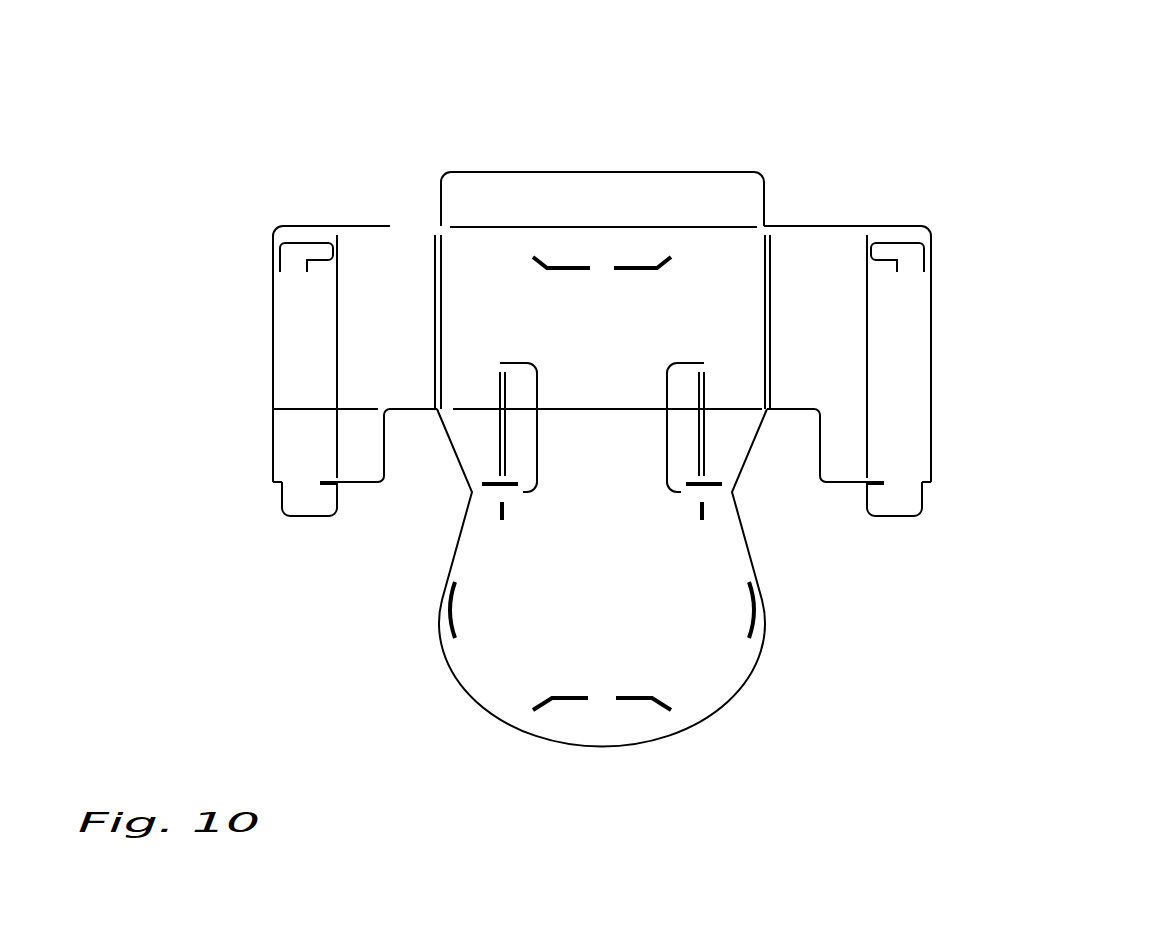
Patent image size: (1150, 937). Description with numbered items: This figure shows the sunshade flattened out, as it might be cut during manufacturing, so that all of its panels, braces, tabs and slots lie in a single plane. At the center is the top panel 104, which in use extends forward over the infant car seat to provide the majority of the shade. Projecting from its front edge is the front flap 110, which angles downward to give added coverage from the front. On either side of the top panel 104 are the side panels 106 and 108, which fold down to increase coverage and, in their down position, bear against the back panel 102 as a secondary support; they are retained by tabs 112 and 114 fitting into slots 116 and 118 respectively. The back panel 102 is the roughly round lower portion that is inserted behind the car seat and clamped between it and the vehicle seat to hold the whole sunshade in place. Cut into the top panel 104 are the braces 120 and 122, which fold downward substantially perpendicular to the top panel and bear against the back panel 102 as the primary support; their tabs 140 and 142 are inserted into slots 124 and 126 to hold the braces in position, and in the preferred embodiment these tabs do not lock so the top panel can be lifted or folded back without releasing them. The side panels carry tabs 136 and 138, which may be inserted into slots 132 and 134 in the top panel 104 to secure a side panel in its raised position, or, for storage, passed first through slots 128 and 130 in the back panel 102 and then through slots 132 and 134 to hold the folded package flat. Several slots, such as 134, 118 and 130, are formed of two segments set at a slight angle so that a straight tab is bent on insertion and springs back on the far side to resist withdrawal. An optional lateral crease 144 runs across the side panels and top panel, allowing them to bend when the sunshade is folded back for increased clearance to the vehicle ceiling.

The back panel 102 is at (595, 748).
The top panel 104 is at (473, 270).
The side panel 106 is at (932, 370).
The side panel 108 is at (271, 352).
The front flap 110 is at (608, 168).
The tab 112 is at (897, 519).
The tab 114 is at (307, 518).
The slot 116 is at (756, 645).
The slot 118 is at (444, 643).
The brace 120 is at (682, 448).
The brace 122 is at (519, 448).
The slot 124 is at (703, 522).
The slot 126 is at (502, 522).
The slot 128 is at (679, 719).
The slot 130 is at (524, 718).
The slot 132 is at (672, 256).
The slot 134 is at (533, 256).
The tab 136 is at (900, 246).
The tab 138 is at (306, 245).
The tab 140 is at (683, 493).
The tab 142 is at (517, 490).
The lateral crease 144 is at (300, 409).